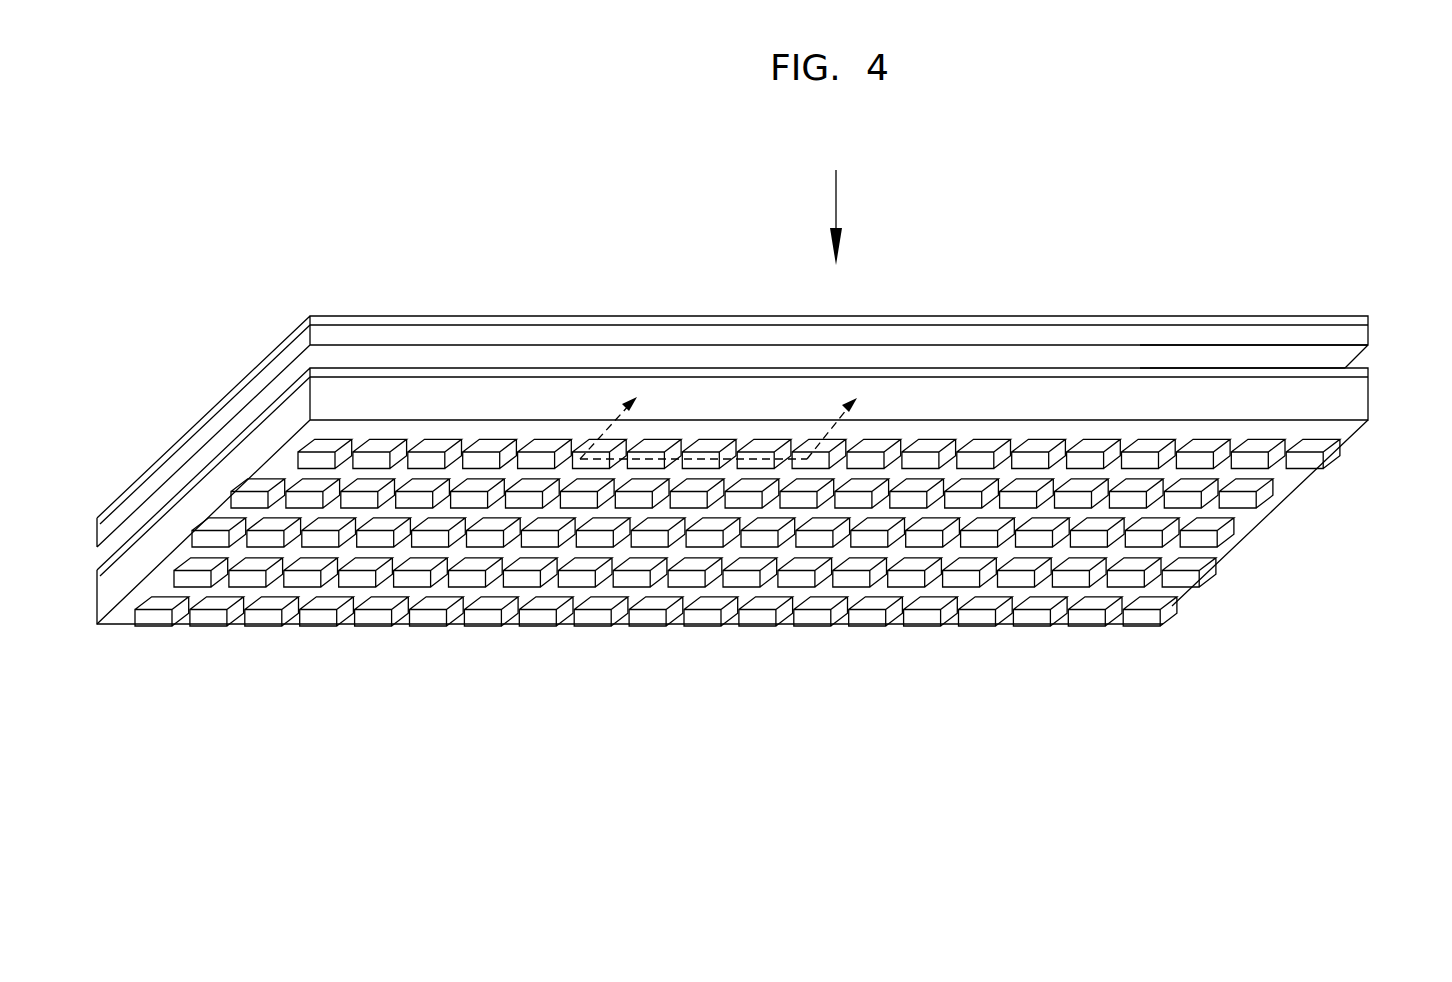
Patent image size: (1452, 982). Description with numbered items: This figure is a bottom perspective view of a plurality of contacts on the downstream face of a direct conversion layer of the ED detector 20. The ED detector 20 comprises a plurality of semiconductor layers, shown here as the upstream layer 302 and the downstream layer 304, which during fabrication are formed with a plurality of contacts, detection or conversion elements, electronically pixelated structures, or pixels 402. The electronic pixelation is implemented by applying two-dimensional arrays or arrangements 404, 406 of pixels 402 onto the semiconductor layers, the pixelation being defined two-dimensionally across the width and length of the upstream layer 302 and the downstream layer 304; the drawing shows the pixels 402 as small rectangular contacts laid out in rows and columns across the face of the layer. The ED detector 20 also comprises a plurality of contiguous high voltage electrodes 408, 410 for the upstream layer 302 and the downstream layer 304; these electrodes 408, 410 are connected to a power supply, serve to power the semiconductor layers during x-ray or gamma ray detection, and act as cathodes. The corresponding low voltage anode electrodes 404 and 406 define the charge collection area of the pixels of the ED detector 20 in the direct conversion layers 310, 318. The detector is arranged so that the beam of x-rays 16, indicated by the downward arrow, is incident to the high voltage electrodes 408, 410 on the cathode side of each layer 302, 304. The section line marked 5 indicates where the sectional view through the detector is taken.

The beam of x-rays 16 is at (838, 191).
The ED detector 20 is at (737, 609).
The upstream layer 302 is at (732, 386).
The downstream layer 304 is at (166, 717).
The direct conversion layer 310 is at (755, 490).
The direct conversion layer 318 is at (108, 593).
The pixels 402 is at (430, 624).
The two-dimensional array of pixels (low voltage anode electrode) 404 is at (1226, 353).
The two-dimensional array of pixels (low voltage anode electrode) 406 is at (1157, 602).
The high voltage electrode 408 is at (1138, 322).
The high voltage electrode 410 is at (1370, 370).
The section line 5- 5 is at (730, 420).